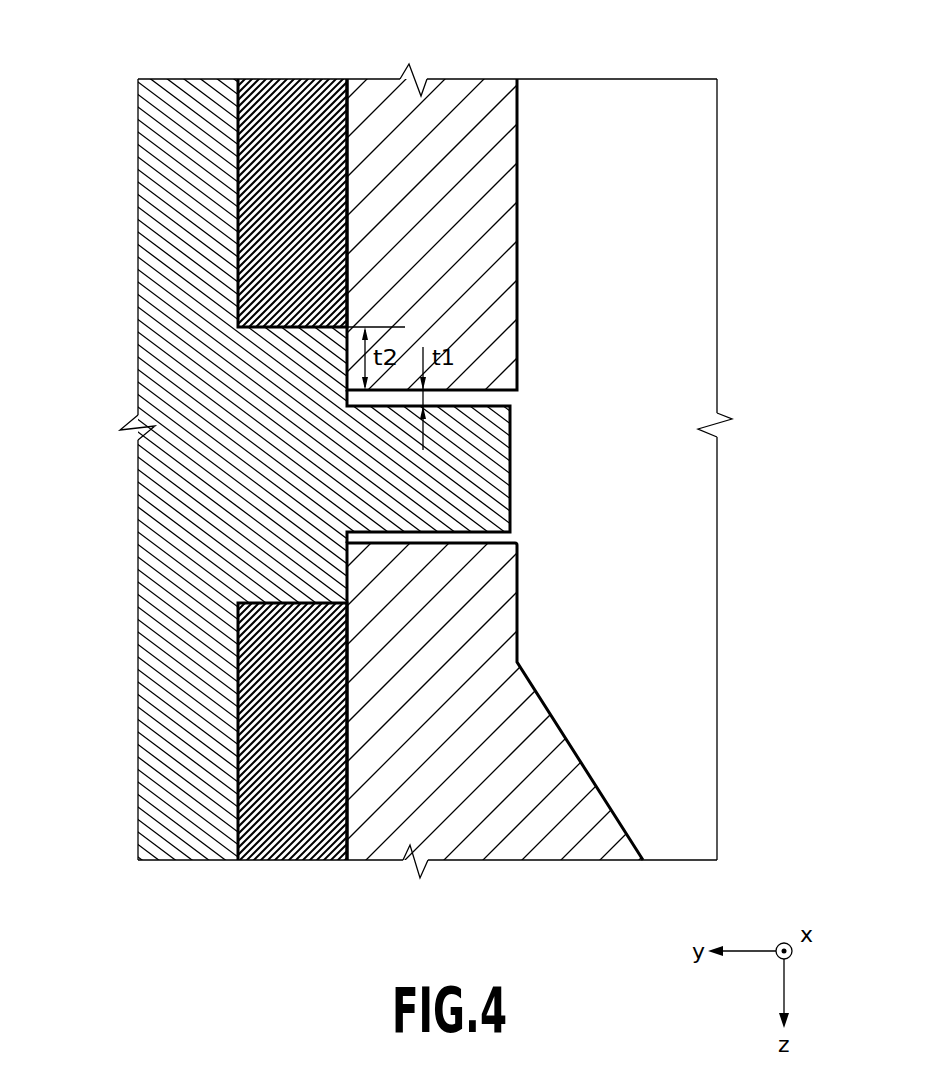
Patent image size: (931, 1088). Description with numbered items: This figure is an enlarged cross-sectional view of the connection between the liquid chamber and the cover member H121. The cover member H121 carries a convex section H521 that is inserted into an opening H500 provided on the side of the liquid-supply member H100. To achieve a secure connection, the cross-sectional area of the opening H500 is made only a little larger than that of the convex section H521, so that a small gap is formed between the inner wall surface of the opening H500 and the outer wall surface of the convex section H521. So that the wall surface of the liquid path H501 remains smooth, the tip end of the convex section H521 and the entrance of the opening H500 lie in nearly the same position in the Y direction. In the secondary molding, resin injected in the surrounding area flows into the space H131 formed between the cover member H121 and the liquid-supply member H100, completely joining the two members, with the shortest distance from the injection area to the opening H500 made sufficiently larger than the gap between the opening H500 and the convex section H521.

The cover member H121 is at (160, 362).
The space H131 is at (300, 97).
The liquid-supply member H100 is at (462, 103).
The opening H500 is at (490, 397).
The convex section H521 is at (490, 467).
The liquid path H501 is at (705, 231).